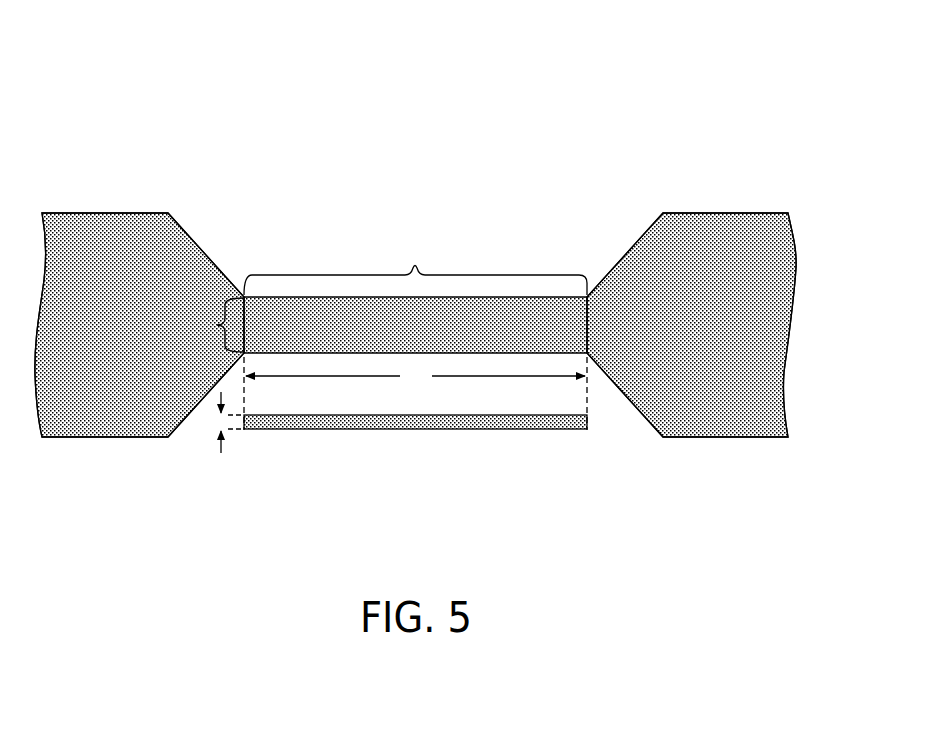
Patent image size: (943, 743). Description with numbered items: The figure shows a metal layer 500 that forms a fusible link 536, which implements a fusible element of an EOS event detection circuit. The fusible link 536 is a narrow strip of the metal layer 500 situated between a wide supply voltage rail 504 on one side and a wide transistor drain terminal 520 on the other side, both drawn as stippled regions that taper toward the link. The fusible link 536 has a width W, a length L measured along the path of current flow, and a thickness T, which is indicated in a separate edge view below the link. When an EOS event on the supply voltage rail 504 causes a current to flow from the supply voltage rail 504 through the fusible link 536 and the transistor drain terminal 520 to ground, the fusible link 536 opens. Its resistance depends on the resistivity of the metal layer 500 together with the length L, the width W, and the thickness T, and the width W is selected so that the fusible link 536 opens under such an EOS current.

The metal layer 500 is at (733, 67).
The supply voltage rail 504 is at (115, 428).
The transistor drain terminal 520 is at (726, 428).
The fusible link 536 is at (281, 275).